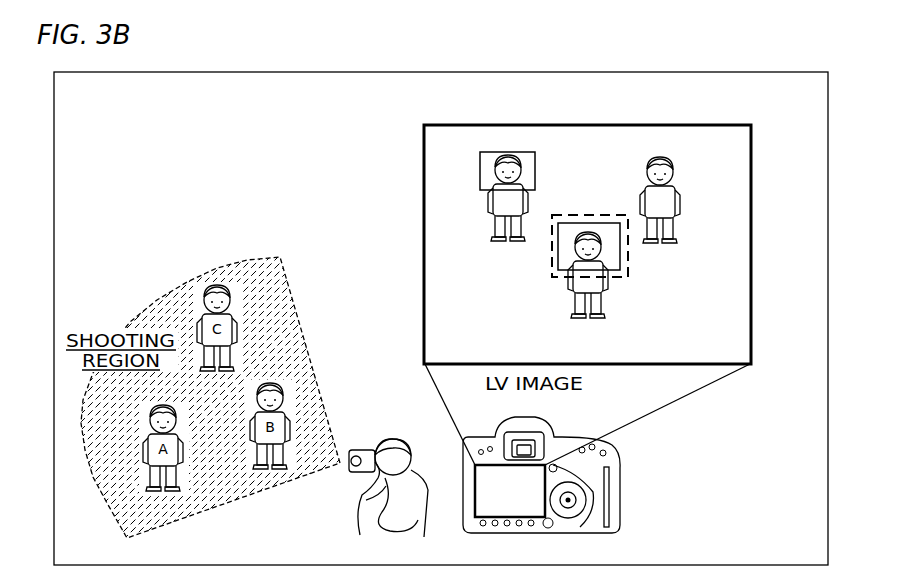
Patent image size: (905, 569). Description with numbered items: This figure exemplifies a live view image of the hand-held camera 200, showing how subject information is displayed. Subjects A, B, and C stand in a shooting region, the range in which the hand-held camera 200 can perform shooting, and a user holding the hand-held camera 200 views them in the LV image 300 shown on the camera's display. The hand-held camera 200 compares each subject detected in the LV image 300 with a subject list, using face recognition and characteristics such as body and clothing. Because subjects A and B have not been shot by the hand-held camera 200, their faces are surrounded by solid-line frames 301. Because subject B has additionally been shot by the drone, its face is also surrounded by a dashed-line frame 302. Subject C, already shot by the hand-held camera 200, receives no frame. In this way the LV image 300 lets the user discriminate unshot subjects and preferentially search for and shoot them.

The hand-held camera 200 is at (590, 504).
The LV image 300 is at (600, 142).
The solid-line frame 301 is at (483, 190).
The dashed-line frame 302 is at (558, 277).